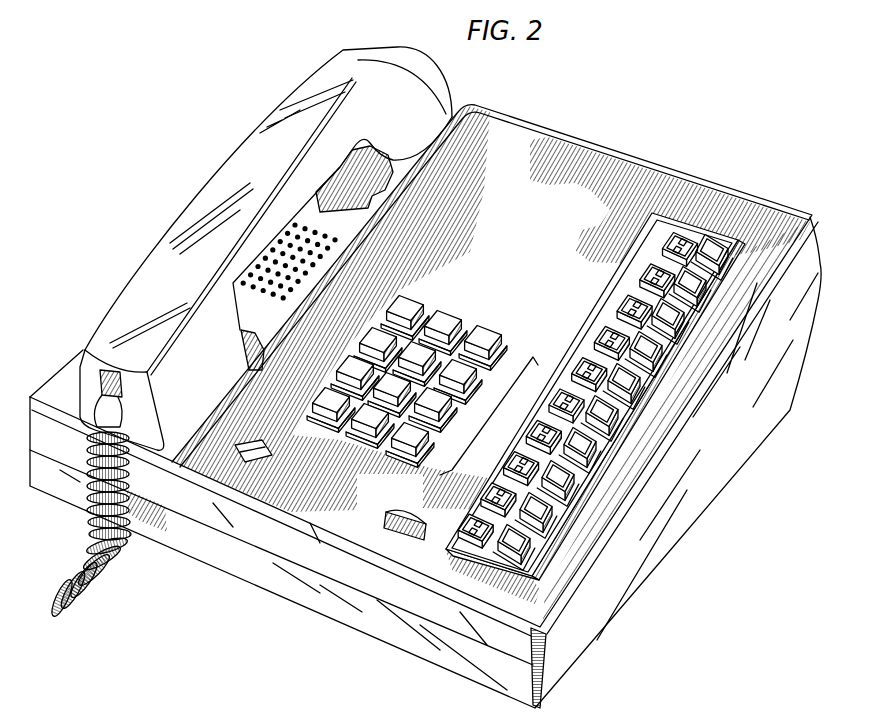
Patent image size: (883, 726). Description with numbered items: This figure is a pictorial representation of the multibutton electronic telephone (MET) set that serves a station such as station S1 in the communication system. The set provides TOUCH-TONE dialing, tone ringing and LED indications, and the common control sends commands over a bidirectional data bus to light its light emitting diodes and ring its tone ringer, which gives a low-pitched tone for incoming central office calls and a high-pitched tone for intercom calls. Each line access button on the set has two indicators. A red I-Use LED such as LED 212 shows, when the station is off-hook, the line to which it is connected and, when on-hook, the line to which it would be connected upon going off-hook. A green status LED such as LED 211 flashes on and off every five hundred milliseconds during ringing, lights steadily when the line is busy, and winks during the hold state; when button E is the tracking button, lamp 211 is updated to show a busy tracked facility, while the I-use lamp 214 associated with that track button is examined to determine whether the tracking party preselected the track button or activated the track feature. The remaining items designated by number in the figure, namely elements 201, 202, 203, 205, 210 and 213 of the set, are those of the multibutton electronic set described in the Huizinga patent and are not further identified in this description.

The station S1 is at (449, 377).
The base housing 201 is at (726, 470).
The handset 202 is at (188, 242).
The handset cord 203 is at (105, 596).
The top cover faceplate 205 is at (530, 136).
The line select keys 210 is at (622, 402).
The status LED 211 is at (582, 368).
The I-Use LED 212 is at (670, 238).
The dial keypad 213 is at (422, 386).
The I-use lamp 214 is at (590, 352).